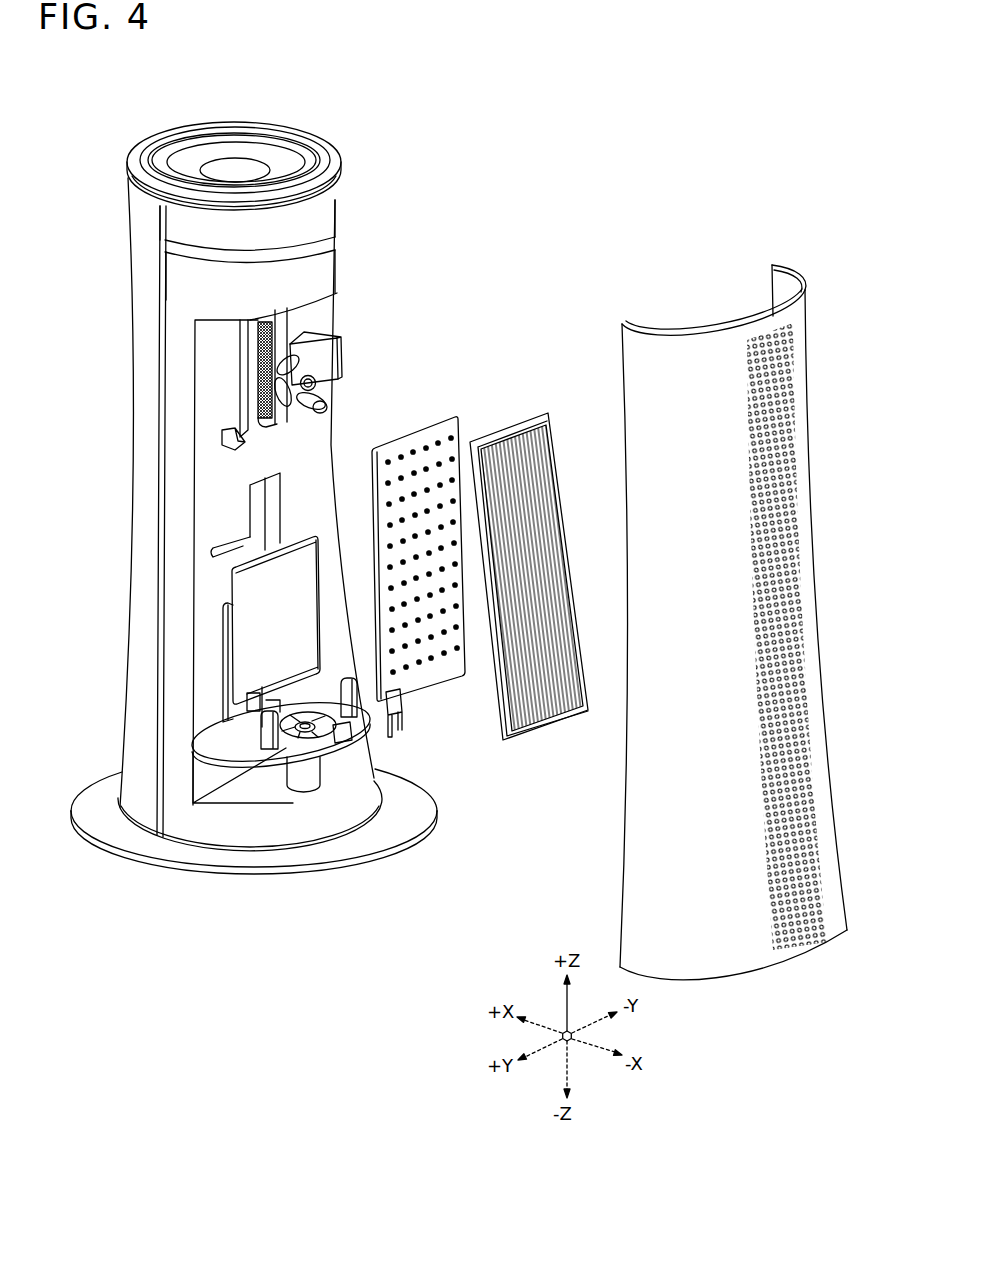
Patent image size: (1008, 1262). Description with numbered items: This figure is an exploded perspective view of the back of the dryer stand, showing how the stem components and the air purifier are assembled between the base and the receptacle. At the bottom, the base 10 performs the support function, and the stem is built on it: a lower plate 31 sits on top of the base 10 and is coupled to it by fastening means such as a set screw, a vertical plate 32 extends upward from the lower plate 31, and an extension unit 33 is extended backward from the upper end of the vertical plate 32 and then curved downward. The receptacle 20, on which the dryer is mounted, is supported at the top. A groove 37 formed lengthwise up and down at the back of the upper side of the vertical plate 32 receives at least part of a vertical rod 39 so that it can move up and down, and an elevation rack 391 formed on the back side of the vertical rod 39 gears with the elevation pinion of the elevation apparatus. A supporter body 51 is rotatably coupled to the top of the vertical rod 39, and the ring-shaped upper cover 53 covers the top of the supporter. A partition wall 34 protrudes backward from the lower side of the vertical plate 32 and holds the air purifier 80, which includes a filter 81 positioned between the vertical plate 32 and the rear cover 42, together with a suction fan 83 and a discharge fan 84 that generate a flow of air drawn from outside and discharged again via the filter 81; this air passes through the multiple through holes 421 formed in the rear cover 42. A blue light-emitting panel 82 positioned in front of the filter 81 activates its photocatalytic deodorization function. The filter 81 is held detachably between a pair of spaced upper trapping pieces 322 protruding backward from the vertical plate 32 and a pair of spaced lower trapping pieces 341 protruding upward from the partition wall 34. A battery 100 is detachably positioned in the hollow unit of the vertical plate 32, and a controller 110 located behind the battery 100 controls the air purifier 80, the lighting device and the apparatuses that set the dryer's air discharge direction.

The base 10 is at (222, 862).
The receptacle 20 is at (273, 152).
The lower plate 31 is at (185, 825).
The vertical plate 32 is at (217, 503).
The extension unit 33 is at (318, 262).
The partition wall 34 is at (270, 758).
The groove 37 is at (272, 379).
The vertical rod 39 is at (250, 387).
The rear cover 42 is at (757, 622).
The supporter body 51 is at (323, 203).
The upper cover 53 is at (328, 150).
The air purifier 80 is at (503, 392).
The filter 81 is at (547, 447).
The blue light-emitting panel 82 is at (402, 448).
The suction fan 83 is at (337, 740).
The discharge fan 84 is at (333, 363).
The battery 100 is at (223, 658).
The controller 110 is at (248, 585).
The upper trapping piece 322 is at (233, 443).
The lower trapping piece 341 is at (224, 735).
The elevation rack 391 is at (273, 322).
The through holes 421 is at (792, 515).